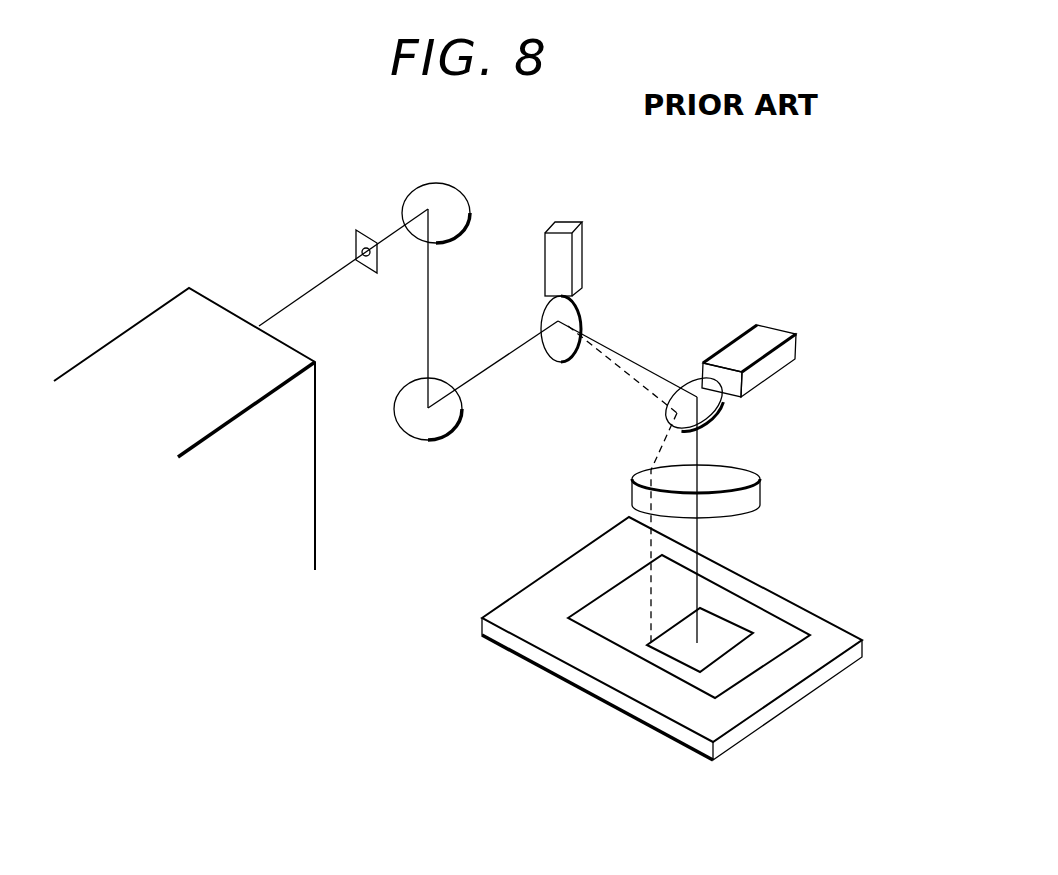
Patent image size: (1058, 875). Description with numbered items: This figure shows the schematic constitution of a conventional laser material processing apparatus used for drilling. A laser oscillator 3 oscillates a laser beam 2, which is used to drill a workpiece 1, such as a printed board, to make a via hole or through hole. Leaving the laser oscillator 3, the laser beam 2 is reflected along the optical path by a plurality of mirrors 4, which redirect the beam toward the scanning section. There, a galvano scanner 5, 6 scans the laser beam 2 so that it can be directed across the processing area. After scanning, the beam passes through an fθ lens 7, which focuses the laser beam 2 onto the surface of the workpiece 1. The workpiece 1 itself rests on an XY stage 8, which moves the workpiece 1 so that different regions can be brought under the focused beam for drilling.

The workpiece 1 is at (730, 610).
The laser beam 2 is at (327, 278).
The laser oscillator 3 is at (155, 307).
The mirrors 4 is at (470, 203).
The galvano scanner 5 is at (585, 252).
The galvano scanner 6 is at (793, 347).
The fθ lens 7 is at (763, 490).
The XY stage 8 is at (532, 580).